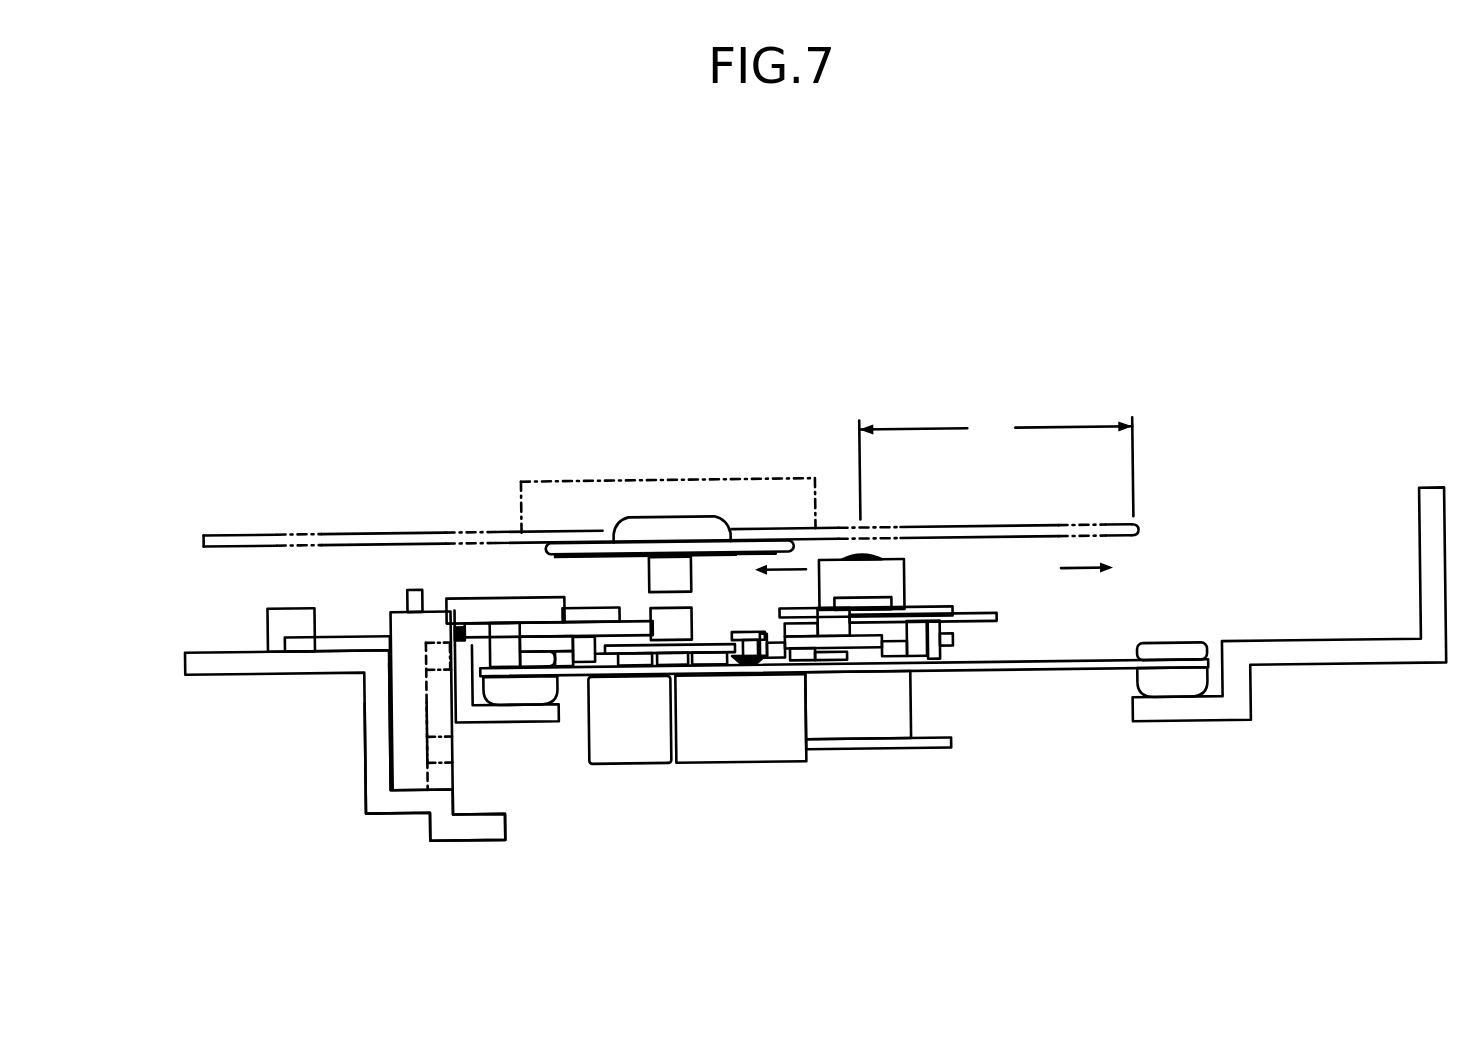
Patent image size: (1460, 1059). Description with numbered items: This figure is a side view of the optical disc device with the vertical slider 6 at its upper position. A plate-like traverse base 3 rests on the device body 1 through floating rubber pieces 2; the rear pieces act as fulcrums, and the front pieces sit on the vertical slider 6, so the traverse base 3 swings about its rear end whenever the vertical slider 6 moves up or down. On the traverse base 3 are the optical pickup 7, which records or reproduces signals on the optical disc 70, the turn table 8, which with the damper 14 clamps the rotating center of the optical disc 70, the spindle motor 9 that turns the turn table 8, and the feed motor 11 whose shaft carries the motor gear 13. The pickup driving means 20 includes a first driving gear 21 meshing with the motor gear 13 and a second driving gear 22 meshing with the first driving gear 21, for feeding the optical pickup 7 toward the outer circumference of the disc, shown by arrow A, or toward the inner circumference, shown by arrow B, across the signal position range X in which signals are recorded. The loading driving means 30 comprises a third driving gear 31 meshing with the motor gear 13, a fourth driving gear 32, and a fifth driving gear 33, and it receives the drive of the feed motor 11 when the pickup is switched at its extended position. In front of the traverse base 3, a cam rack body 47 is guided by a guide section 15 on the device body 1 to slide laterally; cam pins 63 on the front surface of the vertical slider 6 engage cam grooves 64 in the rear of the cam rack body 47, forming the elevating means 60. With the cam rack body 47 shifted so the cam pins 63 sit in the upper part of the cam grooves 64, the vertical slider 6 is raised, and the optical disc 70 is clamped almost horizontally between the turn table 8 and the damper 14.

The device body 1 is at (210, 663).
The floating rubber pieces 2 is at (530, 696).
The traverse base 3 is at (1060, 675).
The vertical slider 6 is at (552, 711).
The optical pickup 7 is at (893, 576).
The turn table 8 is at (675, 527).
The spindle motor 9 is at (630, 740).
The feed motor 11 is at (793, 748).
The motor gear 13 is at (757, 664).
The damper 14 is at (567, 487).
The guide section 15 is at (275, 627).
The pickup driving means 20 is at (958, 646).
The first driving gear 21 is at (863, 650).
The second driving gear 22 is at (1000, 619).
The loading driving means 30 is at (597, 594).
The third driving gear 31 is at (708, 647).
The fourth driving gear 32 is at (583, 608).
The fifth driving gear 33 is at (513, 605).
The cam rack body 47 is at (400, 708).
The elevating means 60 is at (460, 750).
The cam pins 63 is at (427, 657).
The cam grooves 64 is at (422, 735).
The optical disc 70 is at (237, 525).
The arrow A is at (1083, 570).
The arrow B is at (792, 570).
The signal position range X is at (996, 463).